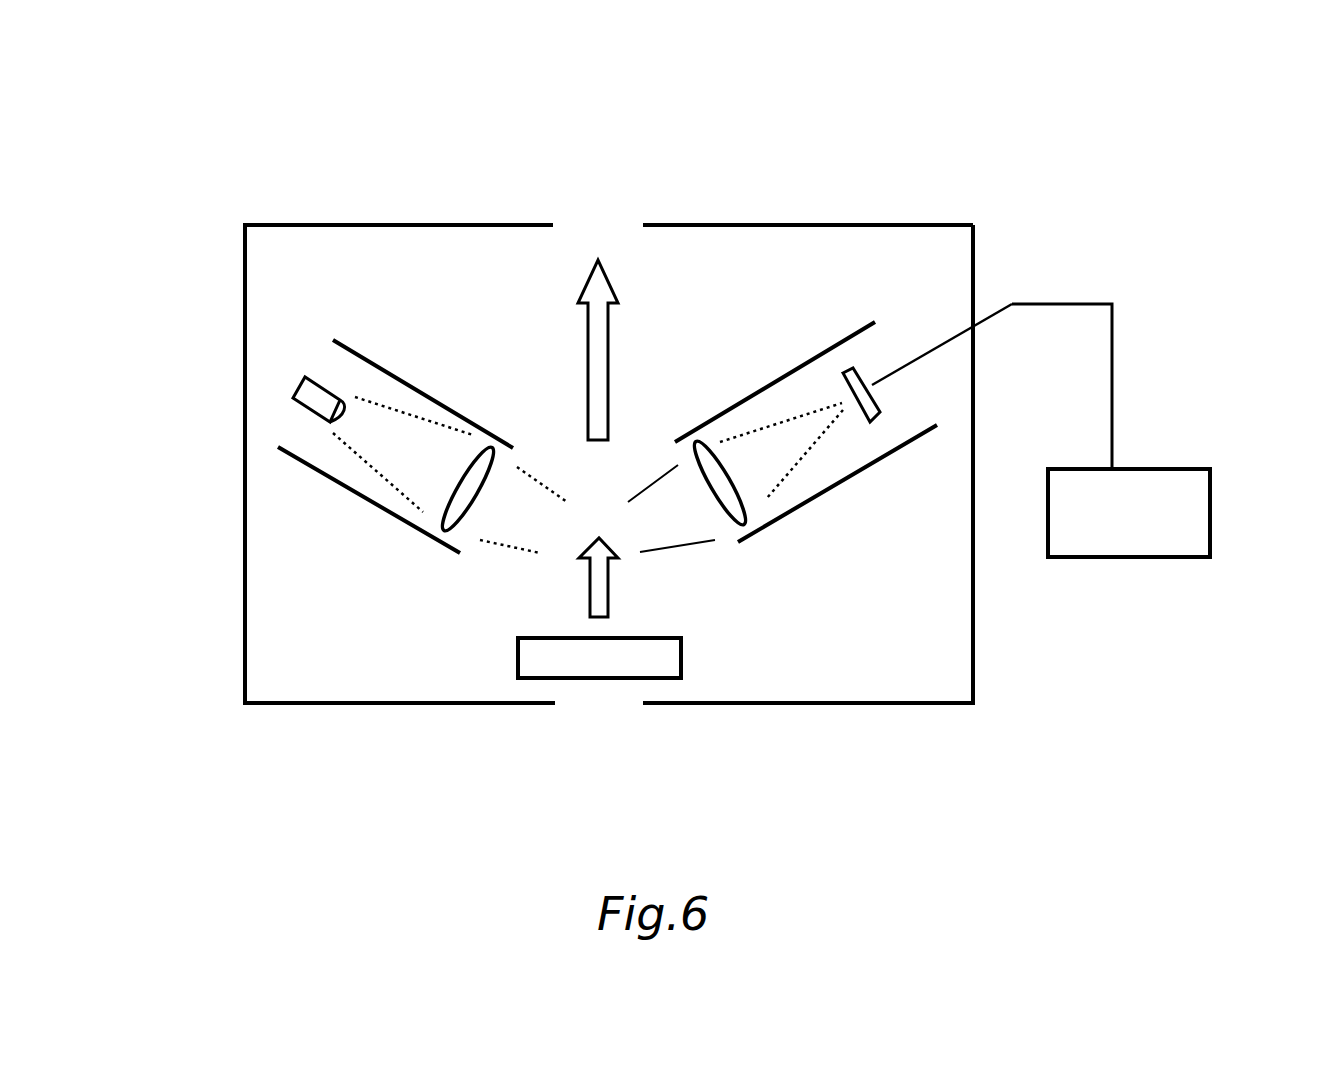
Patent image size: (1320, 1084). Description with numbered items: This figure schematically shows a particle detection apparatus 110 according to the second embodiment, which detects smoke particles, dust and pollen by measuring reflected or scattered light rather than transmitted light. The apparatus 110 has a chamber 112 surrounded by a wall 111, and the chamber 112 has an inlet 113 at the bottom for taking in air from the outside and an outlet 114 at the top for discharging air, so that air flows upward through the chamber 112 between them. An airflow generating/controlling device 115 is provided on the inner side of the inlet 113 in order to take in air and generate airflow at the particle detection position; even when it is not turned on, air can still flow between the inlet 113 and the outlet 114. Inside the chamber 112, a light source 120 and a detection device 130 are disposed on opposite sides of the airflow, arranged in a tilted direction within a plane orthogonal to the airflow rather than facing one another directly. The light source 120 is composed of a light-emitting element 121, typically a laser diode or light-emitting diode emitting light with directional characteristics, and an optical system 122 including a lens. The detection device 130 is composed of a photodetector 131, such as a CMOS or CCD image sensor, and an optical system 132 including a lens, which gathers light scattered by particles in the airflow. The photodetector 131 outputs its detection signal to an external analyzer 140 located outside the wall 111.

The particle detection apparatus 110 is at (1074, 233).
The wall 111 is at (357, 703).
The chamber 112 is at (690, 285).
The inlet 113 is at (593, 702).
The outlet 114 is at (578, 225).
The airflow generating/controlling device 115 is at (653, 652).
The light source 120 is at (421, 390).
The light-emitting element 121 is at (300, 395).
The optical system 122 is at (450, 517).
The detection device 130 is at (763, 376).
The photodetector 131 is at (927, 359).
The optical system 132 is at (727, 503).
The analyzer 140 is at (1162, 490).